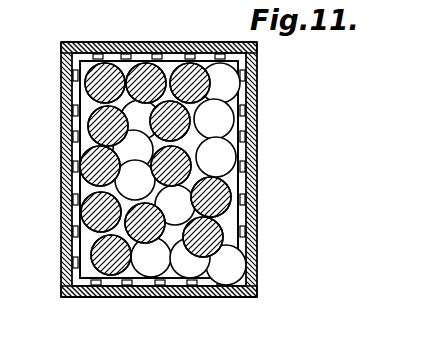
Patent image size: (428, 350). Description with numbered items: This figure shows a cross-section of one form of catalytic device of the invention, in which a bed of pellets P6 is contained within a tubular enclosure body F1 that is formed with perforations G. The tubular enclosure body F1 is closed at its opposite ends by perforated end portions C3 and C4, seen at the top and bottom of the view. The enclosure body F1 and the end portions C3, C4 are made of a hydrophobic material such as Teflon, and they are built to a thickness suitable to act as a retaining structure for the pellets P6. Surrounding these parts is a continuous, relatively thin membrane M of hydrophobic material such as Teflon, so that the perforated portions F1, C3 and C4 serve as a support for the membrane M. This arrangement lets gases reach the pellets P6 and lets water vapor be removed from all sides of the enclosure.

The perforated end portion C3 is at (150, 43).
The perforated end portion C4 is at (131, 291).
The membrane M is at (259, 125).
The tubular enclosure body F1 is at (258, 157).
The perforations G is at (254, 180).
The bed of pellets P6 is at (97, 133).